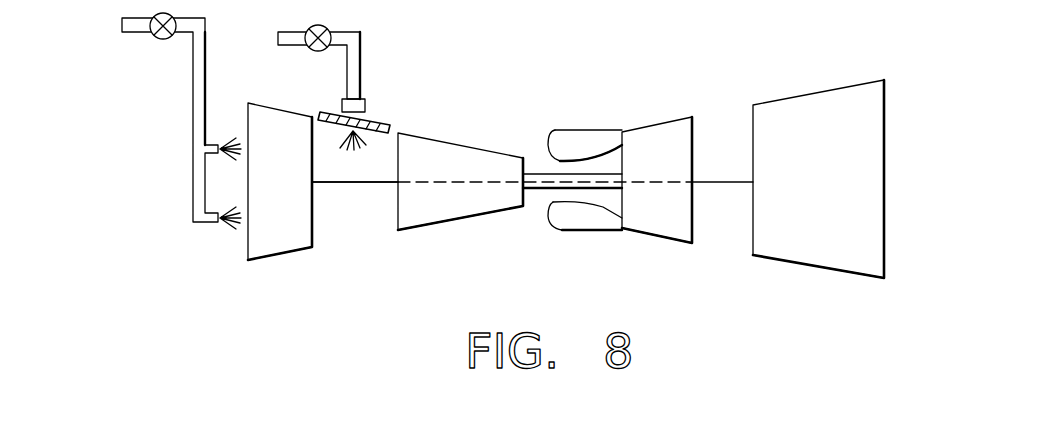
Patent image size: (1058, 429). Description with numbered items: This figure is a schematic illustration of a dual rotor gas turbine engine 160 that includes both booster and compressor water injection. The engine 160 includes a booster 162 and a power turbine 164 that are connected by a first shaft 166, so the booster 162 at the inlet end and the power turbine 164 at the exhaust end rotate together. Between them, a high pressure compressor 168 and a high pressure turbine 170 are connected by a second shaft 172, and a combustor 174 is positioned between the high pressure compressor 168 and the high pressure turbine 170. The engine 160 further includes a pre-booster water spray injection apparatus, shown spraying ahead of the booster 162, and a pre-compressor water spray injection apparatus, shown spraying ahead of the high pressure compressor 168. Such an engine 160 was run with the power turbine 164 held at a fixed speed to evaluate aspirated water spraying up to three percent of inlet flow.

The engine 160 is at (503, 169).
The booster 162 is at (303, 252).
The power turbine 164 is at (810, 267).
The first shaft 166 is at (335, 183).
The high pressure compressor 168 is at (495, 212).
The high pressure turbine 170 is at (640, 237).
The second shaft 172 is at (535, 173).
The combustor 174 is at (577, 233).